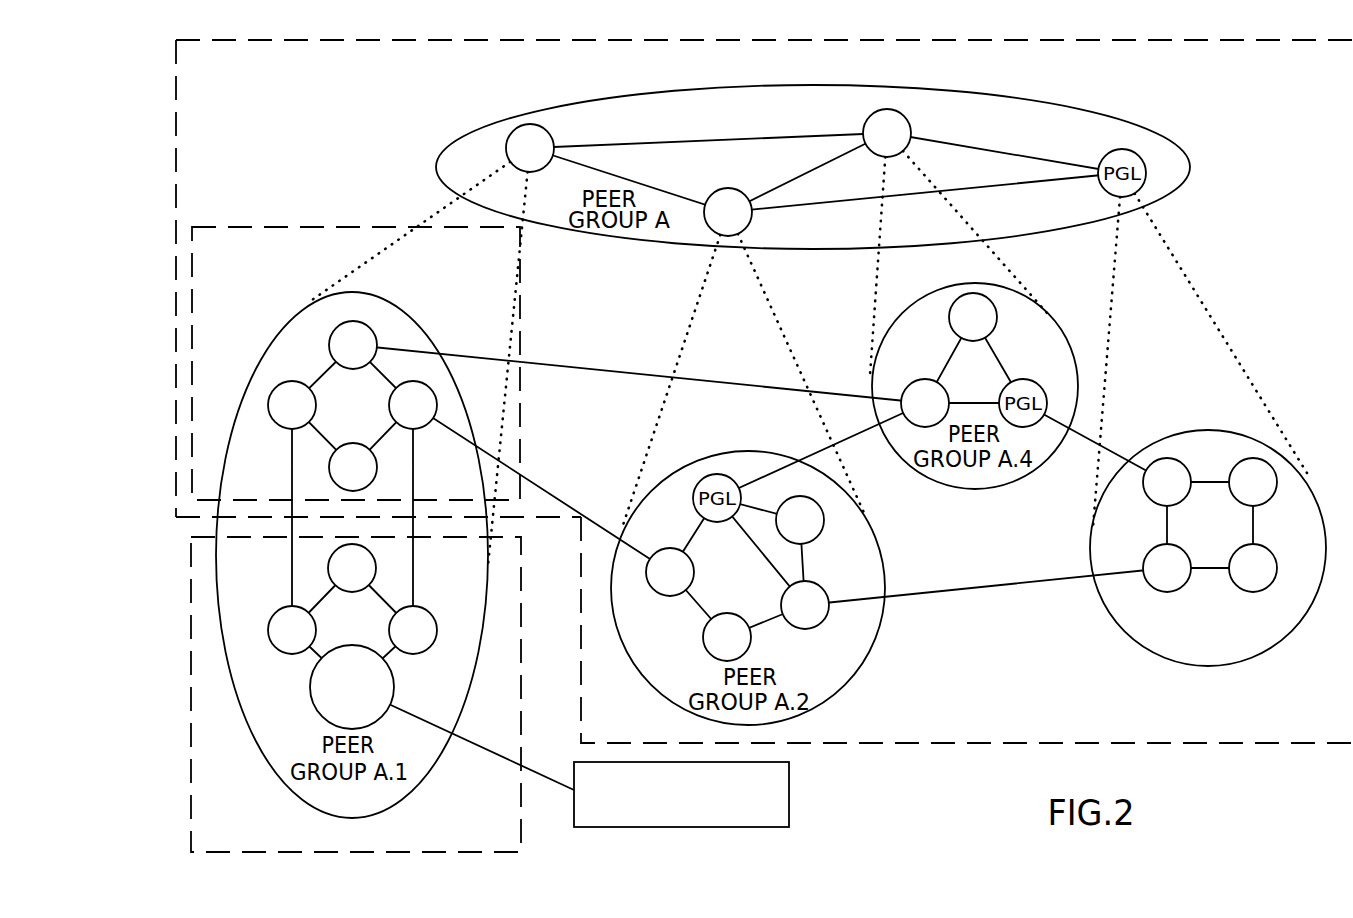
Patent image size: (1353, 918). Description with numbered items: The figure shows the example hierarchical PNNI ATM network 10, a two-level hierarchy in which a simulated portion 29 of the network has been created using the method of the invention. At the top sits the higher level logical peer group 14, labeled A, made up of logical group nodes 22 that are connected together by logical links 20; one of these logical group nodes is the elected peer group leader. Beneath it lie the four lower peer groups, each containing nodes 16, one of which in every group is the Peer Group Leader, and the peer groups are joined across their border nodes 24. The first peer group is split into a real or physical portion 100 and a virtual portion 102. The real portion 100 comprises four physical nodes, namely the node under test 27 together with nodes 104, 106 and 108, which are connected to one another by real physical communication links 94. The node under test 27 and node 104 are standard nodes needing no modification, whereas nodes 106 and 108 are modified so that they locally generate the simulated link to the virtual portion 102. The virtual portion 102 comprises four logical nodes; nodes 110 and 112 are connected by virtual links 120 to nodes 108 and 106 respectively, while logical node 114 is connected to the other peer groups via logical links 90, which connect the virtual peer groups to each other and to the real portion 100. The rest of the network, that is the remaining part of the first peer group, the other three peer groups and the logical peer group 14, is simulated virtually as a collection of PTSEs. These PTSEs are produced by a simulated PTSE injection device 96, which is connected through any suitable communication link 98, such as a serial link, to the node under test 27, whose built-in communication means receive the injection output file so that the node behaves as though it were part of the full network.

The hierarchical PNNI ATM network 10 is at (1160, 762).
The logical peer group 14 is at (1070, 107).
The nodes 16 is at (1273, 578).
The logical links 20 is at (680, 140).
The logical group nodes 22 is at (528, 126).
The border nodes 24 is at (648, 587).
The node under test 27 is at (395, 674).
The simulated portion of the network 29 is at (1230, 743).
The logical links 90 is at (546, 490).
The real physical communication links 94 is at (380, 598).
The PTSE injection device 96 is at (790, 785).
The communication link 98 is at (553, 778).
The real portion 100 is at (191, 833).
The virtual portion 102 is at (266, 226).
The node 104 is at (330, 560).
The node 106 is at (271, 644).
The node 108 is at (436, 614).
The node 110 is at (424, 425).
The node 112 is at (270, 391).
The logical node 114 is at (370, 326).
The virtual links 120 is at (513, 527).